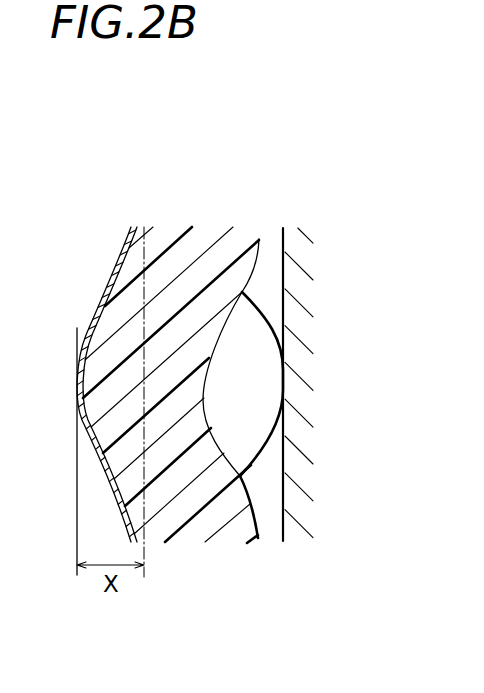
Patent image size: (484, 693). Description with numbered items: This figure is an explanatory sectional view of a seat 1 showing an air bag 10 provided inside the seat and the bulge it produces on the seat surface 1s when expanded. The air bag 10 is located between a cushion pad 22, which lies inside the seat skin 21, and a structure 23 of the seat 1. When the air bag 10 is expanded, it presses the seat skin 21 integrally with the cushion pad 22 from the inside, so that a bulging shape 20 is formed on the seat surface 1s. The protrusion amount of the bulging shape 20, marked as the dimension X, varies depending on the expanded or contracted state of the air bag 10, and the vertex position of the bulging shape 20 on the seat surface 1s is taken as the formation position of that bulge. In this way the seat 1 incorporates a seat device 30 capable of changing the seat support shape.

The seat 1 is at (143, 143).
The seat device 30 is at (186, 328).
The seat surface 1s is at (76, 384).
The seat skin 21 is at (127, 250).
The bulging shape 20 is at (76, 383).
The structure 23 is at (282, 241).
The cushion pad 22 is at (255, 490).
The air bag 10 is at (267, 316).